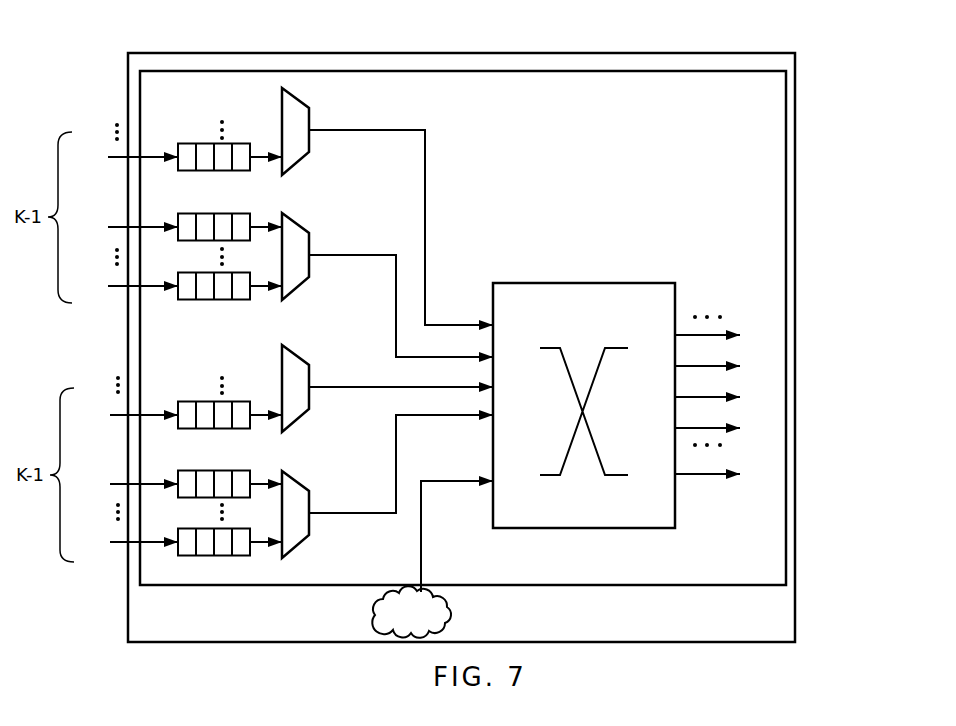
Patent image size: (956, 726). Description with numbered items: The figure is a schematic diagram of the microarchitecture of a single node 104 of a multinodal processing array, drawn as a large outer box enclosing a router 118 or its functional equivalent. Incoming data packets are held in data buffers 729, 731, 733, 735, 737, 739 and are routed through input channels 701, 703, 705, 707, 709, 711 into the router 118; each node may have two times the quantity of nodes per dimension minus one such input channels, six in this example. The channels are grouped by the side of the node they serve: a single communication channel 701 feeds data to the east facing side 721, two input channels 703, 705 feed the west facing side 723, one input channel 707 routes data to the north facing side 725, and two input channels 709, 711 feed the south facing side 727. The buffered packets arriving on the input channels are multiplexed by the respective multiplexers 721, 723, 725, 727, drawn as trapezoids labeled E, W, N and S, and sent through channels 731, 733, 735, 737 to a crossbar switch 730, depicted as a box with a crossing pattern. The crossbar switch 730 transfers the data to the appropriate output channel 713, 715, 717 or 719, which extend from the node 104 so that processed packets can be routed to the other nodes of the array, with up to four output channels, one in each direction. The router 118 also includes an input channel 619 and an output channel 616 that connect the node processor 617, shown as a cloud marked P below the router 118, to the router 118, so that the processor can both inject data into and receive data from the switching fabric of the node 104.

The node 104 is at (510, 53).
The router 118 is at (745, 70).
The input channel 701 is at (125, 156).
The input channel 703 is at (125, 226).
The input channel 705 is at (125, 285).
The input channel 707 is at (126, 414).
The input channel 709 is at (126, 483).
The input channel 711 is at (126, 541).
The data buffer 729 is at (186, 144).
The data buffer / channel 731 is at (190, 214).
The data buffer / channel 733 is at (190, 300).
The data buffer / channel 735 is at (188, 402).
The data buffer / channel 737 is at (190, 471).
The data buffer 739 is at (190, 529).
The east facing side multiplexer 721 is at (300, 155).
The west facing side multiplexer 723 is at (300, 280).
The north facing side multiplexer 725 is at (300, 412).
The south facing side multiplexer 727 is at (300, 538).
The crossbar switch 730 is at (598, 283).
The output channel 713 is at (729, 334).
The output channel 715 is at (729, 365).
The output channel 717 is at (729, 396).
The output channel 719 is at (729, 427).
The output channel 616 is at (729, 473).
The input channel 619 is at (460, 481).
The node processor 617 is at (447, 622).